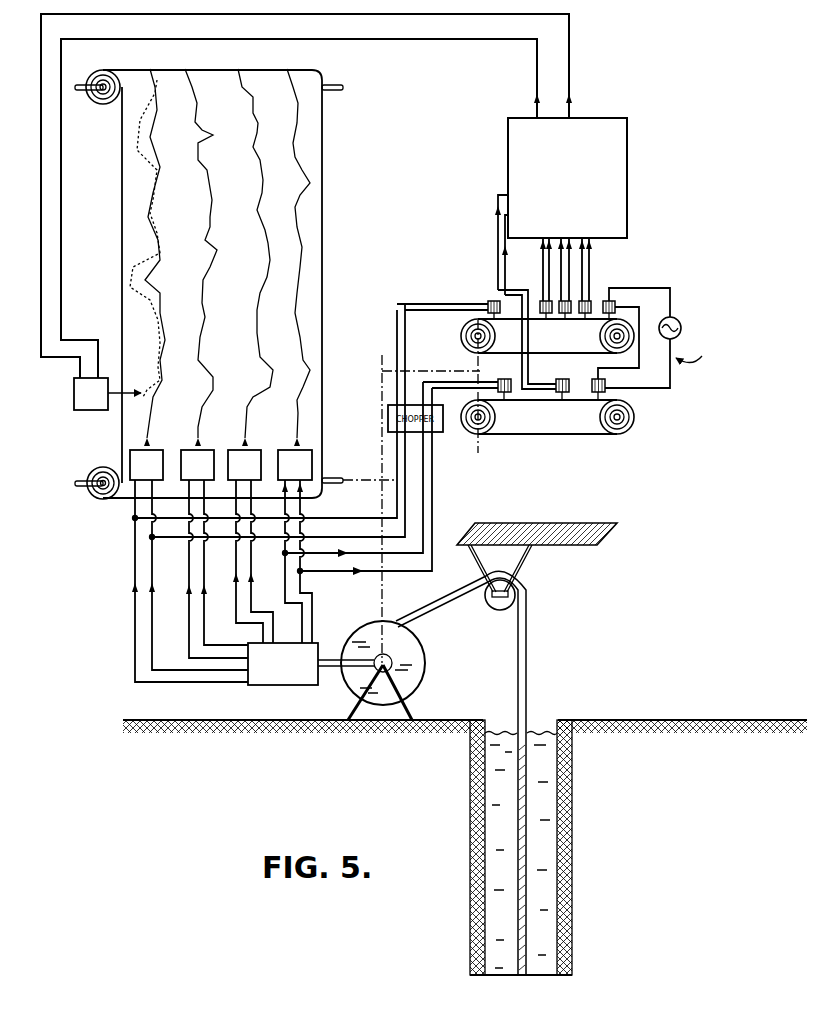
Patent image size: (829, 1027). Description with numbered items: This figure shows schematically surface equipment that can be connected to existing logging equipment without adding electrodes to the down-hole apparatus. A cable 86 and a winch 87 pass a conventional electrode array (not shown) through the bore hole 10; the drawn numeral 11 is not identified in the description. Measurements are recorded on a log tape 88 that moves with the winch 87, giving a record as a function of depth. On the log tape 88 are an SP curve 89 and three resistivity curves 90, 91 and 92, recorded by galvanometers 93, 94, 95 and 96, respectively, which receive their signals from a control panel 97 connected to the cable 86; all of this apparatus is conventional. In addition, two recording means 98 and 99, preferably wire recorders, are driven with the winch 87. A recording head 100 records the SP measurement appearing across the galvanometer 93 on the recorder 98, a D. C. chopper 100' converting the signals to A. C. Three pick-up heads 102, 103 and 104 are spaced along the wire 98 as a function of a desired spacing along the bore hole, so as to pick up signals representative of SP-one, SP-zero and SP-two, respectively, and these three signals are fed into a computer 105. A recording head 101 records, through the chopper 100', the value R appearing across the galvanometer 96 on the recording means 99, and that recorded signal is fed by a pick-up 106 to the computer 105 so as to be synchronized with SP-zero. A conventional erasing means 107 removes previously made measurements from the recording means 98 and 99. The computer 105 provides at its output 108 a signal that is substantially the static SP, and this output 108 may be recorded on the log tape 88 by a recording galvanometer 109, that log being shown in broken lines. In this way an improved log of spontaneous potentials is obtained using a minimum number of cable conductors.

The bore hole 10 is at (553, 722).
The logging cable 11 is at (552, 864).
The cable 86 is at (527, 645).
The winch 87 is at (413, 658).
The log tape 88 is at (312, 237).
The SP curve 89 is at (157, 217).
The resistivity curve 90 is at (212, 192).
The resistivity curve 91 is at (273, 157).
The resistivity curve 92 is at (297, 160).
The galvanometer 93 is at (152, 450).
The galvanometer 94 is at (200, 450).
The galvanometer 95 is at (247, 450).
The galvanometer 96 is at (298, 450).
The control panel 97 is at (268, 678).
The recording means 98 is at (562, 353).
The recording means 99 is at (563, 434).
The recording head 100 is at (448, 292).
The D. C. chopper 100' is at (465, 459).
The recording head 101 is at (505, 392).
The pick-up head 102 is at (548, 318).
The pick-up head 103 is at (565, 318).
The pick-up head 104 is at (585, 318).
The computer 105 is at (622, 163).
The pick-up 106 is at (544, 361).
The erasing means 107 is at (667, 379).
The output 108 is at (538, 83).
The recording galvanometer 109 is at (82, 410).